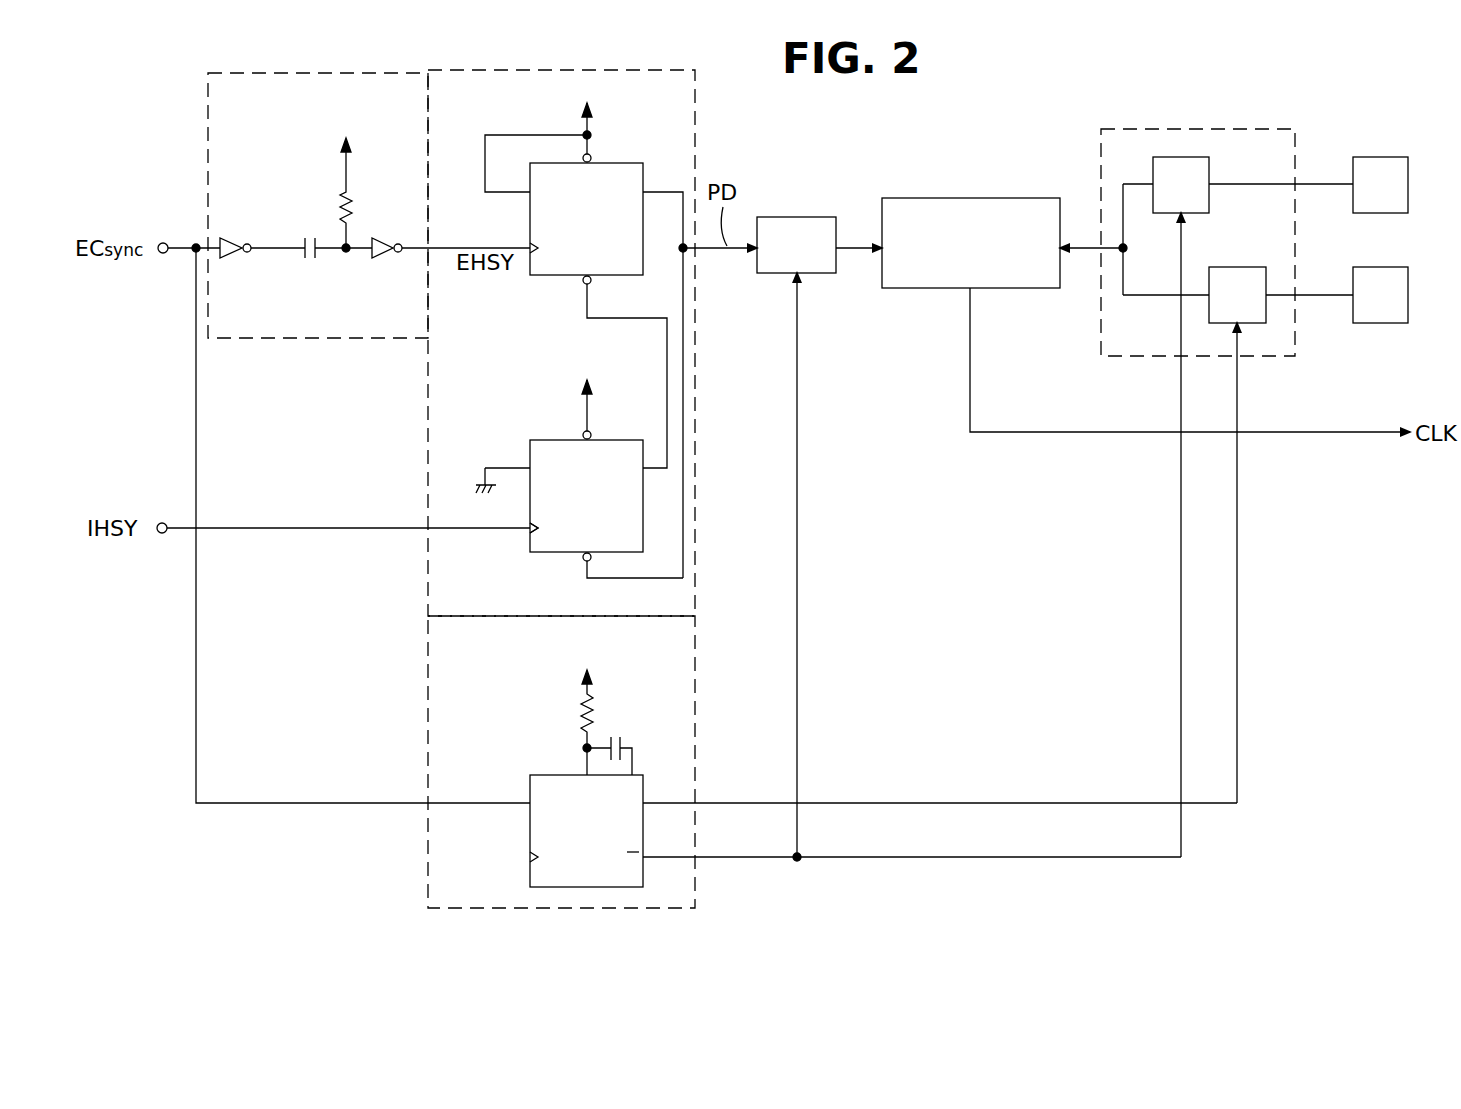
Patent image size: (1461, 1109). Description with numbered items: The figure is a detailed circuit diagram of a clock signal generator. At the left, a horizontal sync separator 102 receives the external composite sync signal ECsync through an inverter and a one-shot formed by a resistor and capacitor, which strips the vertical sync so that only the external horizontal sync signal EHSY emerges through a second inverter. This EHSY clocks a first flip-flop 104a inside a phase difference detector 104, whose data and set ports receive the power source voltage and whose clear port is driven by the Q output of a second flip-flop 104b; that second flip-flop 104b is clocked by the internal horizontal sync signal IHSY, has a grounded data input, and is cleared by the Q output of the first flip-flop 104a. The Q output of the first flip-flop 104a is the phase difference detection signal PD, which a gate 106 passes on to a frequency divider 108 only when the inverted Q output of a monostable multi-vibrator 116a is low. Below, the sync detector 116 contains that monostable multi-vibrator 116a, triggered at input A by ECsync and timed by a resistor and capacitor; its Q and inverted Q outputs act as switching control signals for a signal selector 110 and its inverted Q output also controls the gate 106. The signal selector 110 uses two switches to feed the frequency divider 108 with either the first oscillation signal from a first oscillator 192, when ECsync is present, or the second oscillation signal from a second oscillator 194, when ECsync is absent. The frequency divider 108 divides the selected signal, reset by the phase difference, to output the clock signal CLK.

The horizontal sync separator 102 is at (208, 97).
The phase difference detector 104 is at (695, 134).
The first flip-flop 104a is at (627, 162).
The second flip-flop 104b is at (530, 440).
The gate 106 is at (808, 217).
The frequency divider 108 is at (1010, 198).
The signal selector 110 is at (1244, 129).
The sync detector 116 is at (695, 763).
The monostable multi-vibrator 116a is at (543, 775).
The first oscillator 192 is at (1380, 157).
The second oscillator 194 is at (1380, 323).